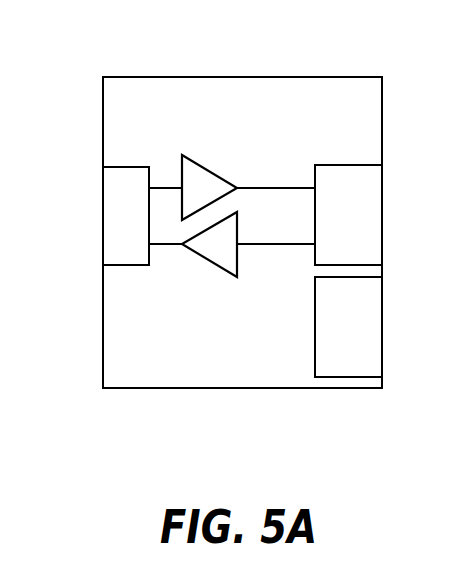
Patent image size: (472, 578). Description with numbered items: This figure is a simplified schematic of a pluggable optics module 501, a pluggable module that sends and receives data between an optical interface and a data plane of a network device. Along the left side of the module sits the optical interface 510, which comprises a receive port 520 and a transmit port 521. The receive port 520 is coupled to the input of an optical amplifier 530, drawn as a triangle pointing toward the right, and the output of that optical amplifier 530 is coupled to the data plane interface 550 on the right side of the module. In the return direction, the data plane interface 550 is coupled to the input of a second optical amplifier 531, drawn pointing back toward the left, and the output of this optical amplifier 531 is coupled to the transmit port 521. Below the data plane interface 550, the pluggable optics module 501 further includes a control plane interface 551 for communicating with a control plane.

The pluggable optics module 501 is at (219, 77).
The optical interface 510 is at (122, 166).
The receive port 520 is at (103, 185).
The transmit port 521 is at (103, 243).
The optical amplifier 530 is at (205, 168).
The optical amplifier 531 is at (198, 254).
The data plane interface 550 is at (326, 165).
The control plane interface 551 is at (338, 378).